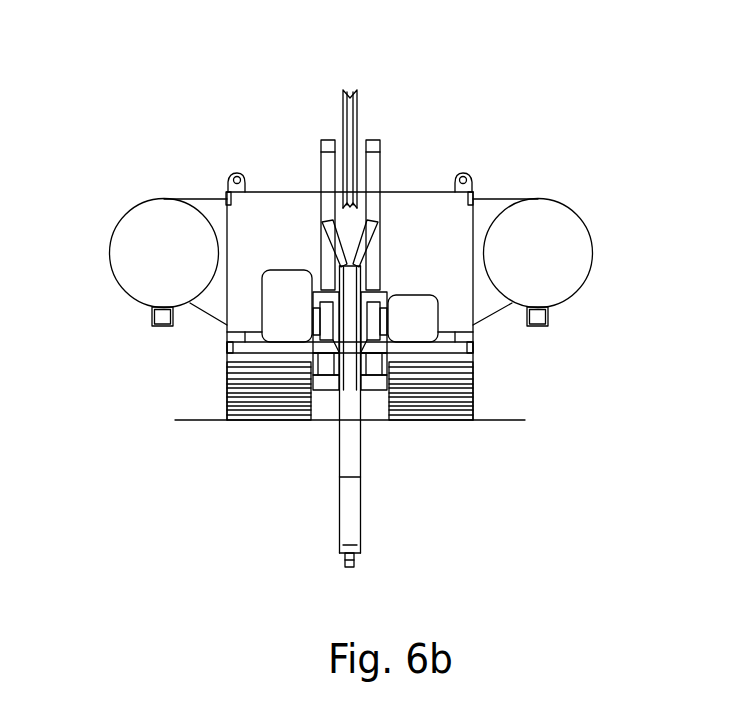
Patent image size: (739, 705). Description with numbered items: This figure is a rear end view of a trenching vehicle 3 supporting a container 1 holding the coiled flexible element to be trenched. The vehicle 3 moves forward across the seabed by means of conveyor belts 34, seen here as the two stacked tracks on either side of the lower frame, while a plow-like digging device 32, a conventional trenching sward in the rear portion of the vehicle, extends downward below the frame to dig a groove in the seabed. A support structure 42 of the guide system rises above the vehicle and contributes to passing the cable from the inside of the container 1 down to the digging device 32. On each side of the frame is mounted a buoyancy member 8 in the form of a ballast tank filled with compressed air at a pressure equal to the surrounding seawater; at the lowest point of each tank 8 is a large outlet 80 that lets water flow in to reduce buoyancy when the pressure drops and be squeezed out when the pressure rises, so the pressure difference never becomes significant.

The container 1 is at (287, 190).
The trenching vehicle 3 is at (453, 152).
The buoyancy member 8 is at (118, 222).
The plow-like digging device 32 is at (351, 514).
The conveyor belt 34 is at (268, 422).
The support structure 42 is at (357, 81).
The tank outlet 80 is at (165, 327).